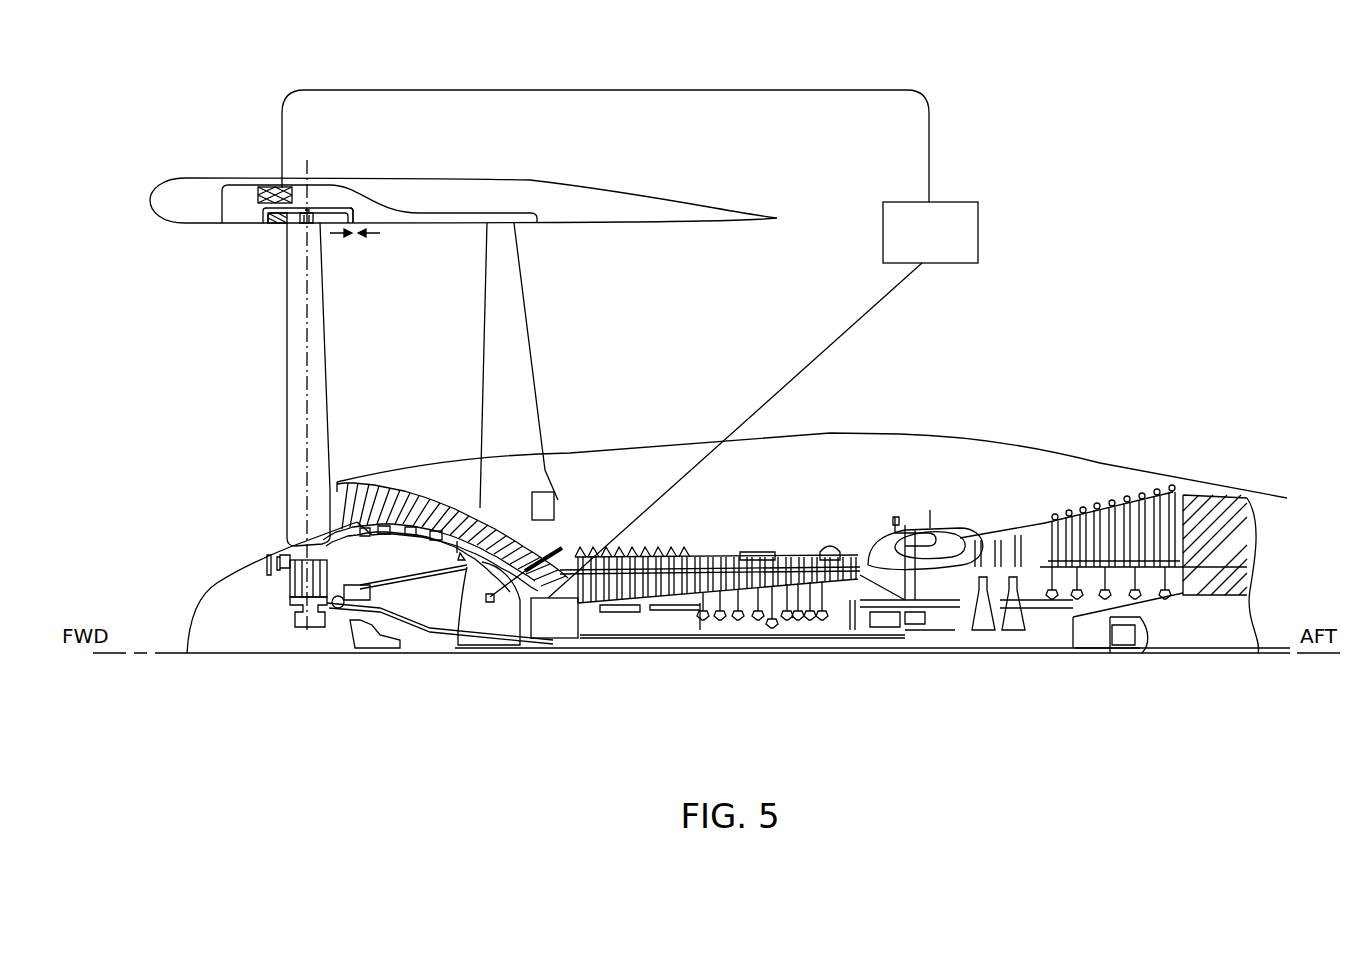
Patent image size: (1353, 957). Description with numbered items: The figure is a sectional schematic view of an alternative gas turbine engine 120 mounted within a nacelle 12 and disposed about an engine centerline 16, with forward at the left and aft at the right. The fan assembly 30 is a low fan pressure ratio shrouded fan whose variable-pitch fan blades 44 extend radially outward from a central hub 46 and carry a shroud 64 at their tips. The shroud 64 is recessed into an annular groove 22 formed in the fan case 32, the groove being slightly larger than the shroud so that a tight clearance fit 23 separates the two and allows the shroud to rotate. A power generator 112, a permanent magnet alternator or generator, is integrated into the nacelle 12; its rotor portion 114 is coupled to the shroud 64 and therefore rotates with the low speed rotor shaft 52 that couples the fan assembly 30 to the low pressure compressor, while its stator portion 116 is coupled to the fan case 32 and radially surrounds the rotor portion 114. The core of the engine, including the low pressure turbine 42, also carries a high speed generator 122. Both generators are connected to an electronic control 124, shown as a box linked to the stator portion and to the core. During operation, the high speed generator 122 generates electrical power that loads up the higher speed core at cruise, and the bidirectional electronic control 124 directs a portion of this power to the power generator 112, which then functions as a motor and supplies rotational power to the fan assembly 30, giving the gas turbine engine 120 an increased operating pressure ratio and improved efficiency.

The nacelle 12 is at (473, 180).
The engine centerline 16 is at (137, 657).
The annular groove 22 is at (358, 208).
The tight clearance fit 23 is at (355, 240).
The fan assembly 30 is at (231, 449).
The fan case 32 is at (427, 227).
The low pressure turbine 42 is at (1095, 478).
The variable-pitch fan blades 44 is at (285, 385).
The central hub 46 is at (300, 630).
The low speed rotor shaft 52 is at (410, 630).
The shroud 64 is at (330, 217).
The power generator 112 is at (243, 190).
The rotor portion 114 is at (273, 223).
The stator portion 116 is at (267, 187).
The gas turbine engine 120 is at (1088, 133).
The high speed generator 122 is at (553, 640).
The electronic control 124 is at (909, 244).